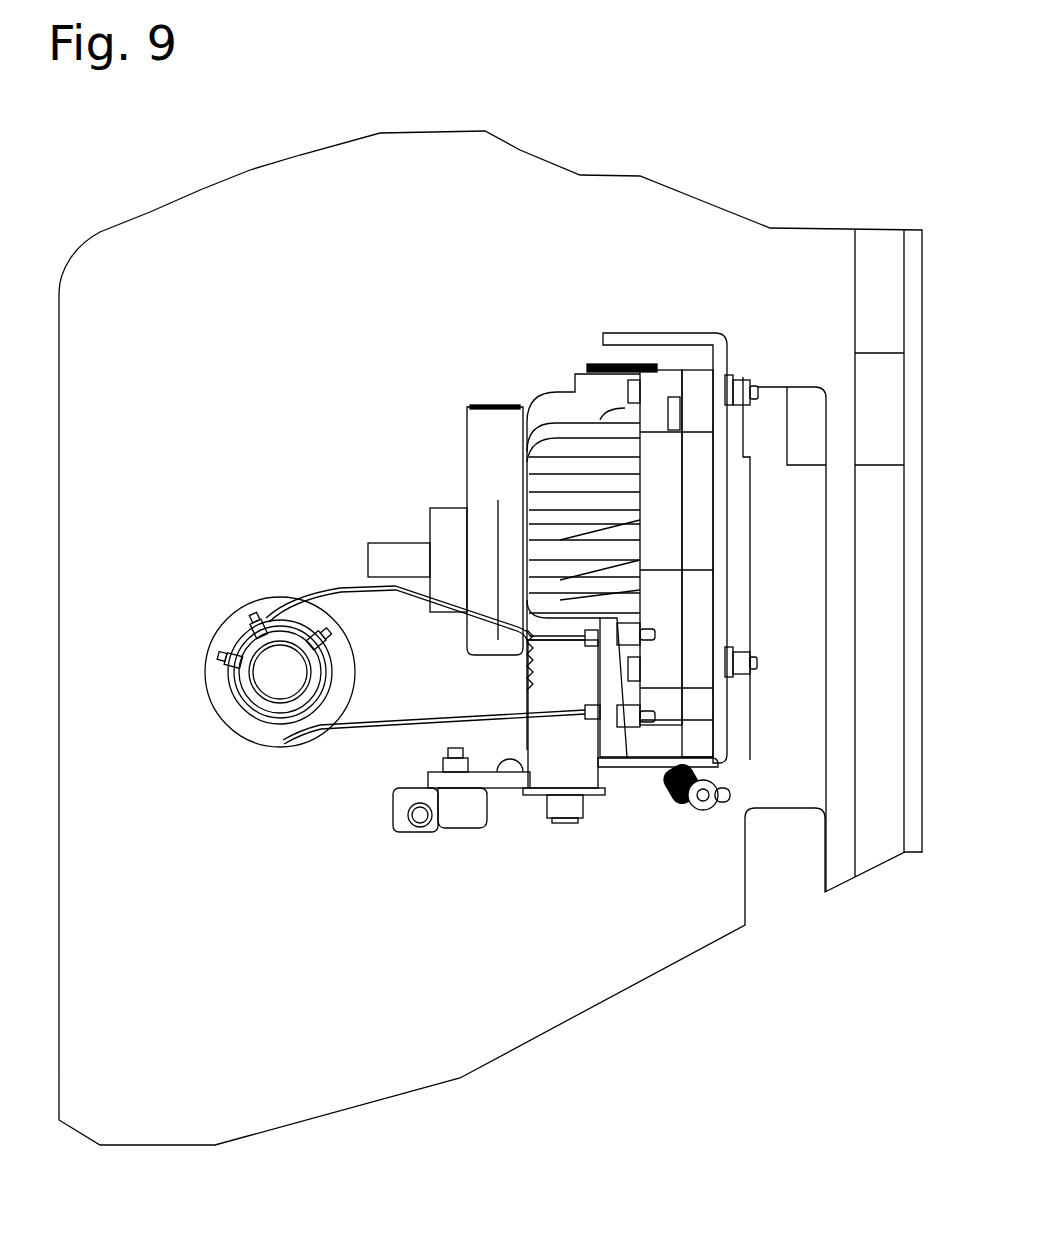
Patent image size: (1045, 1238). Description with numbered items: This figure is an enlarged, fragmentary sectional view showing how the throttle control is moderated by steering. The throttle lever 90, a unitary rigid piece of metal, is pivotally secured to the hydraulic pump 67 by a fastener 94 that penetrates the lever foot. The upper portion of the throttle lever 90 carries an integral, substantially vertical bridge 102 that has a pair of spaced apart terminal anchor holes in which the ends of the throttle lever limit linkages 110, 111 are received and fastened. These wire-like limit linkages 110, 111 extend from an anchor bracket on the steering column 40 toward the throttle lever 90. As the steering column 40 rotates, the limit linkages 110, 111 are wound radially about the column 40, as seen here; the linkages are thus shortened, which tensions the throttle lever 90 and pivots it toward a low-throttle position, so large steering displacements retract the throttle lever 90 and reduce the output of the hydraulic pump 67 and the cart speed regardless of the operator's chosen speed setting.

The hydraulic pump 67 is at (528, 392).
The throttle lever limit linkage 110 is at (345, 598).
The throttle lever limit linkage 111 is at (345, 730).
The steering column 40 is at (275, 687).
The bridge 102 is at (607, 680).
The fastener 94 is at (565, 823).
The throttle lever 90 is at (616, 774).